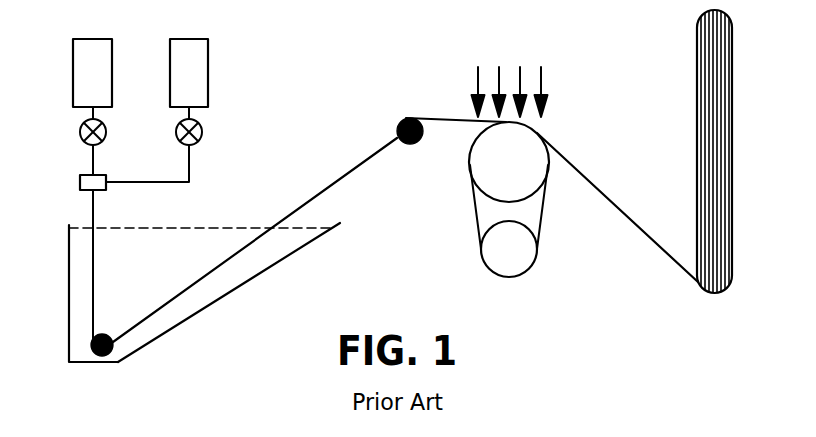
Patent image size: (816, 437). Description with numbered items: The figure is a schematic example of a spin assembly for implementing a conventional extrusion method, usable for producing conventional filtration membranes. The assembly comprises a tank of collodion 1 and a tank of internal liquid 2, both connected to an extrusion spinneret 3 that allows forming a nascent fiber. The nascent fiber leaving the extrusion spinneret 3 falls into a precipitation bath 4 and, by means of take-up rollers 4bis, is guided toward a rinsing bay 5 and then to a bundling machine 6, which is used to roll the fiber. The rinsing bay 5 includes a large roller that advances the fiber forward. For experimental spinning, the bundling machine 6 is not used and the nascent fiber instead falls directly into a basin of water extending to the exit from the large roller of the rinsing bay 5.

The tank of collodion 1 is at (73, 52).
The tank of internal liquid 2 is at (208, 52).
The extrusion spinneret 3 is at (80, 180).
The precipitation bath 4 is at (108, 297).
The take-up rollers 4bis is at (98, 358).
The rinsing bay 5 is at (468, 167).
The bundling machine 6 is at (730, 52).